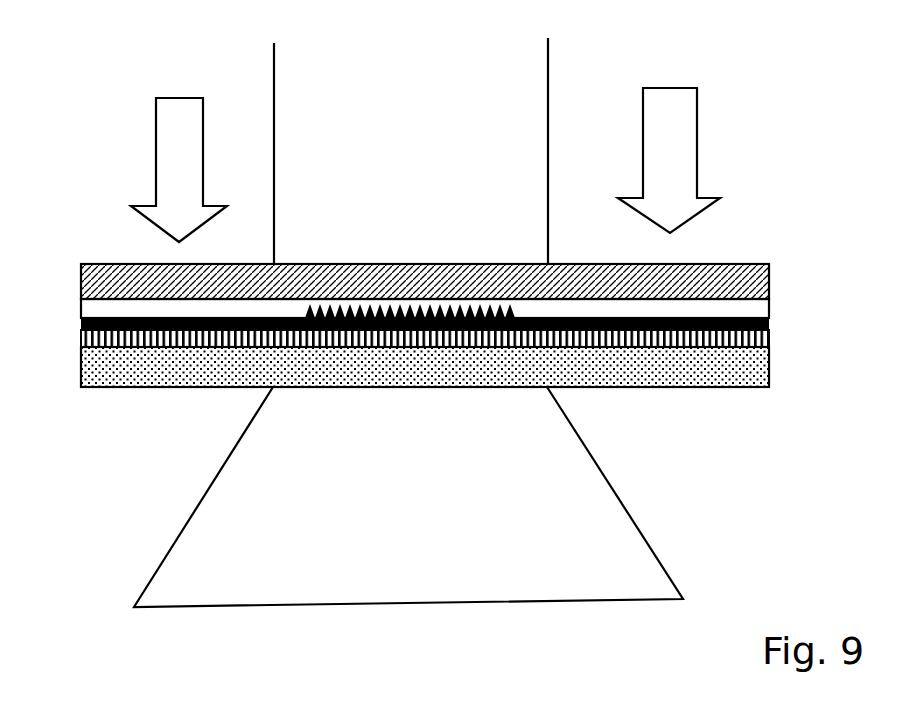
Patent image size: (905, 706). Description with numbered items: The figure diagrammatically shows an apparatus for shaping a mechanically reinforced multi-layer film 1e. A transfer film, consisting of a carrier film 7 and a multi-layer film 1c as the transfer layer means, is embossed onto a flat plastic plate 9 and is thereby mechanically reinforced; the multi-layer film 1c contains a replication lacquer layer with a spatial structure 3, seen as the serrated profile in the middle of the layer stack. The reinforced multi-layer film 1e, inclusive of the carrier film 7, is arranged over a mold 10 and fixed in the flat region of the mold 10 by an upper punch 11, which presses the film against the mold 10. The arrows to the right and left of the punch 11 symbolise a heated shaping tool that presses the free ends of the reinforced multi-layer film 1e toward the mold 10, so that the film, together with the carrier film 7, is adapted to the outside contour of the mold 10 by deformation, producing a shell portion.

The carrier film 7 is at (117, 288).
The spatial structure 3 is at (452, 303).
The upper punch 11 is at (503, 90).
The multi-layer film 1c is at (80, 300).
The mechanically reinforced multi-layer film 1e is at (775, 292).
The flat plastic plate 9 is at (670, 358).
The mold 10 is at (583, 482).